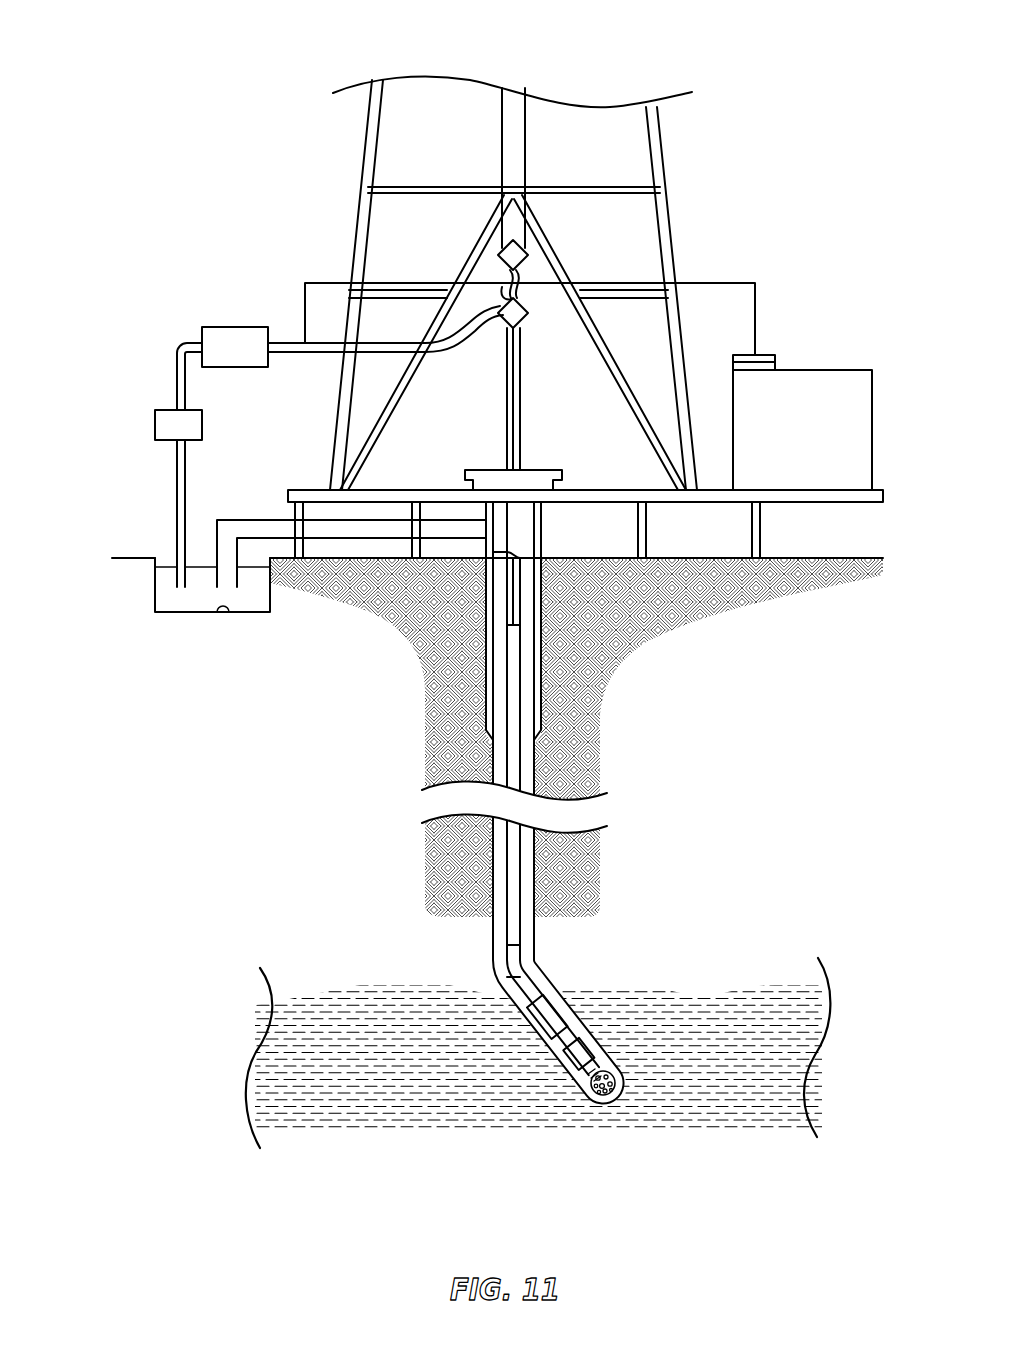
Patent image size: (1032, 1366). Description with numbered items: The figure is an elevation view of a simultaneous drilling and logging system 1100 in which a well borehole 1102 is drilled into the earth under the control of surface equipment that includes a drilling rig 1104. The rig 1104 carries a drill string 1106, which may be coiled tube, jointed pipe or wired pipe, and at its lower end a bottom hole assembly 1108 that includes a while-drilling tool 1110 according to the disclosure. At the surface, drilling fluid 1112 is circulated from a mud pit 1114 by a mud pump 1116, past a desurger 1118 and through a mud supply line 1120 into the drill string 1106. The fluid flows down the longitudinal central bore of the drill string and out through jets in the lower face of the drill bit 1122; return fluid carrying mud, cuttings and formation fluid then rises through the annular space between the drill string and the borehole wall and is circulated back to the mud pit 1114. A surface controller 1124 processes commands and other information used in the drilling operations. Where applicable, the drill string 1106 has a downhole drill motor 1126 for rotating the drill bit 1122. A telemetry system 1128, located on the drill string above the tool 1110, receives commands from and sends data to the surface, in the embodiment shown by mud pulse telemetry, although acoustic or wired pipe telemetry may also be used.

The drilling system 1100 is at (331, 55).
The well borehole 1102 is at (480, 748).
The drilling rig 1104 is at (667, 167).
The drill string 1106 is at (522, 705).
The bottom hole assembly 1108 is at (578, 1053).
The tool 1110 is at (552, 1032).
The drilling fluid 1112 is at (178, 613).
The mud pit 1114 is at (228, 614).
The mud pump 1116 is at (153, 426).
The desurger 1118 is at (235, 327).
The mud supply line 1120 is at (333, 342).
The drill bit 1122 is at (606, 1100).
The surface controller 1124 is at (820, 370).
The downhole drill motor 1126 is at (578, 1057).
The telemetry system 1128 is at (515, 963).